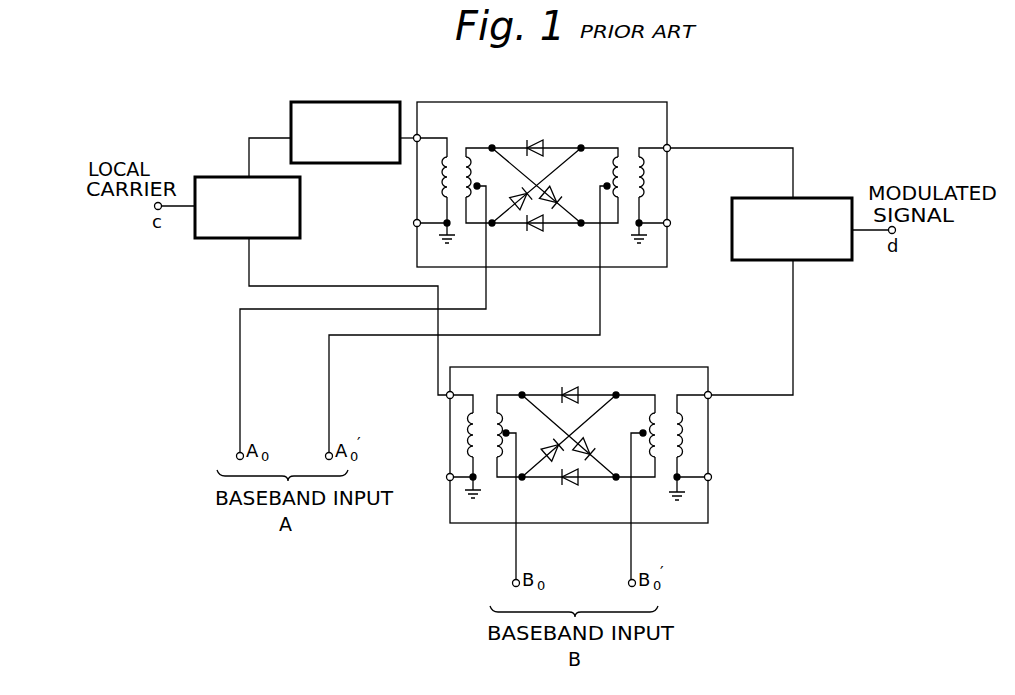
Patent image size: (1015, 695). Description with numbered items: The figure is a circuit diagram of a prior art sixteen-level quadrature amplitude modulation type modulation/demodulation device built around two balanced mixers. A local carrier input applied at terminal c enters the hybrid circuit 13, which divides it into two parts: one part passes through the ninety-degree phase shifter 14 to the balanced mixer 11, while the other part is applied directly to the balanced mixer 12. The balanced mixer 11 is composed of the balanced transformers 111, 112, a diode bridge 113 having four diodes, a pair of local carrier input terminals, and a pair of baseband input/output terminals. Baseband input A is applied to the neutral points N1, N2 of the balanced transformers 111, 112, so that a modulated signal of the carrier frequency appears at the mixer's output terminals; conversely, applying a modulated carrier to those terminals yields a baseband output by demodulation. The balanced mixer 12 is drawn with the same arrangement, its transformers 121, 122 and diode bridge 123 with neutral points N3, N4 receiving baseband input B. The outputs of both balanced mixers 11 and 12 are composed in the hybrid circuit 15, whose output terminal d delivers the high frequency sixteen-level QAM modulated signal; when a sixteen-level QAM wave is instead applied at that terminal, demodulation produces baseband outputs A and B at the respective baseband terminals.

The balanced mixer 11 is at (661, 102).
The balanced mixer 12 is at (699, 367).
The hybrid circuit 13 is at (301, 198).
The 90 degrees phase shifter 14 is at (372, 102).
The hybrid circuit 15 is at (829, 198).
The balanced transformer 111 is at (457, 235).
The balanced transformer 112 is at (625, 235).
The diode bridge 113 is at (546, 160).
The ground of third transformer 121 is at (488, 490).
The ground of fourth transformer 122 is at (661, 490).
The diode ring 123 is at (580, 411).
The neutral point N1 is at (484, 185).
The neutral point N2 is at (598, 185).
The secondary winding N3 is at (513, 436).
The secondary winding N4 is at (635, 436).